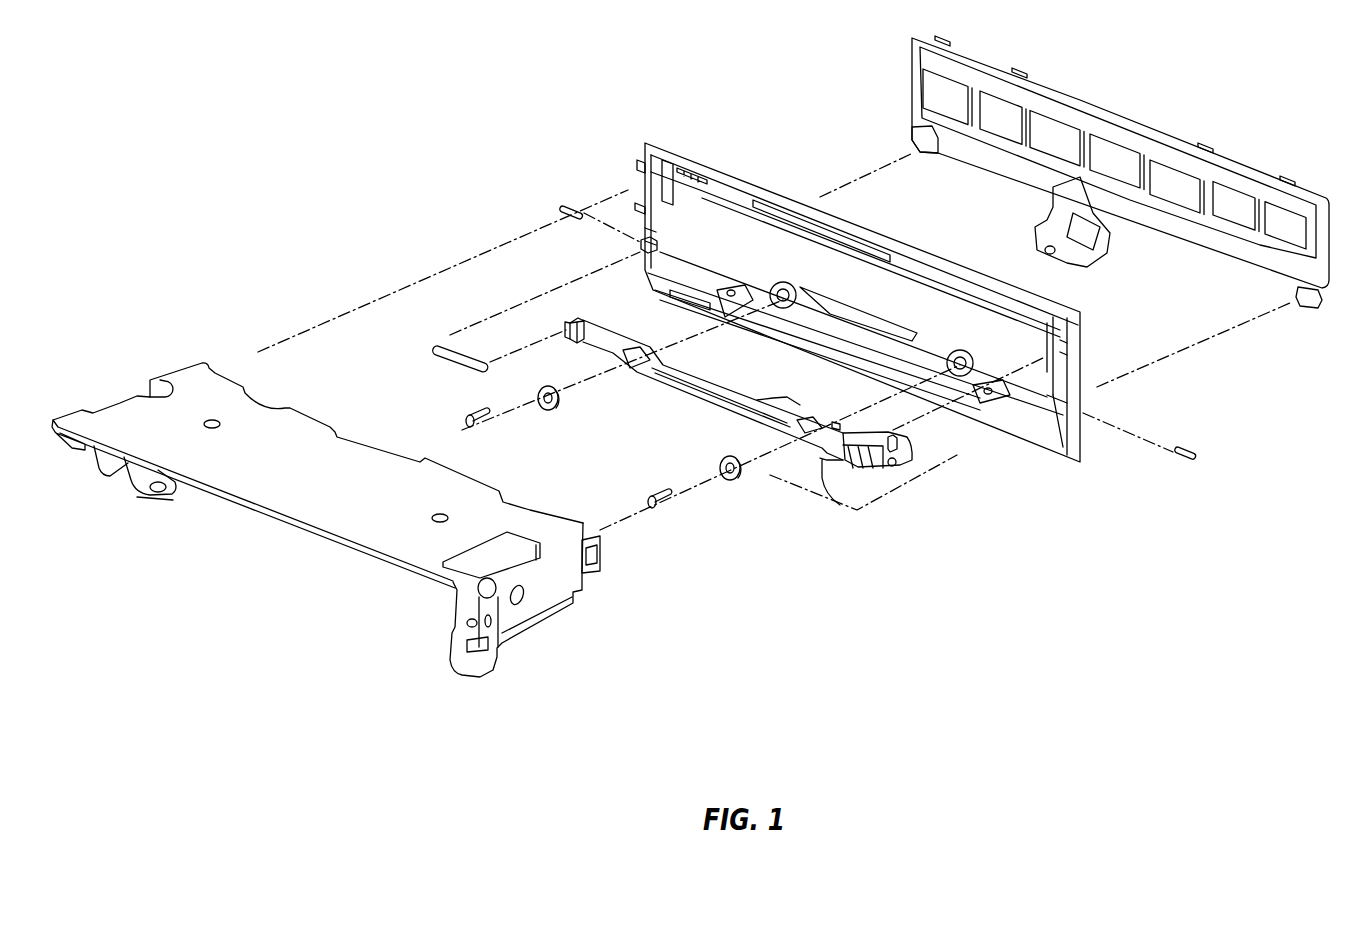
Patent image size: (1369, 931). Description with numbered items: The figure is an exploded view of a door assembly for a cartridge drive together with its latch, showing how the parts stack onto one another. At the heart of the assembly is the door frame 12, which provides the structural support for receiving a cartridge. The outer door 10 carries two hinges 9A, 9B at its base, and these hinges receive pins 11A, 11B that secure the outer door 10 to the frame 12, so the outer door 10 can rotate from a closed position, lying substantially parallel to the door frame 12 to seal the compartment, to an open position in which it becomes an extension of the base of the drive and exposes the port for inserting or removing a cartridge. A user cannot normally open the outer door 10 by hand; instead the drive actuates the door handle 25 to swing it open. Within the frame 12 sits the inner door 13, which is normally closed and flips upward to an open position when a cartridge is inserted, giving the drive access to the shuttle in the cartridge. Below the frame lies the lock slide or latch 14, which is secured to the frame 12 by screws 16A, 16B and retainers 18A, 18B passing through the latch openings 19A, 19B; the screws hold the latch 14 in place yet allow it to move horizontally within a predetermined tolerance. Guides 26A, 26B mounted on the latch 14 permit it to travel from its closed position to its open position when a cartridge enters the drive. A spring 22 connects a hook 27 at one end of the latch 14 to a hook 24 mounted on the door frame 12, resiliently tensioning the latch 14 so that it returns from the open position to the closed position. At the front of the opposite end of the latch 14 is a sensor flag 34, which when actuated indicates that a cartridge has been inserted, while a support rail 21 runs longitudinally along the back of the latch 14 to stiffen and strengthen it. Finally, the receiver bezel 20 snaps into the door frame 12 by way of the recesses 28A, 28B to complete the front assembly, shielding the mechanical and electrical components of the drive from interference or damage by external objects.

The outer door 10 is at (986, 58).
The hinge 9A is at (1318, 305).
The hinge 9B is at (912, 135).
The door frame 12 is at (890, 300).
The inner door 13 is at (855, 240).
The latch 14 is at (908, 452).
The pin 11A is at (1197, 453).
The pin 11B is at (560, 207).
The screw 16A is at (660, 510).
The screw 16B is at (468, 418).
The retainer 18A is at (735, 480).
The retainer 18B is at (549, 410).
The latch opening 19A is at (800, 430).
The latch opening 19B is at (625, 352).
The receiver bezel 20 is at (208, 367).
The support rail 21 is at (700, 398).
The spring 22 is at (433, 352).
The hook 24 is at (641, 243).
The door handle 25 is at (1078, 264).
The guide 26A is at (895, 441).
The guide 26B is at (585, 322).
The hook 27 is at (565, 325).
The recess 28A is at (1065, 350).
The recess 28B is at (657, 231).
The sensor flag 34 is at (840, 505).